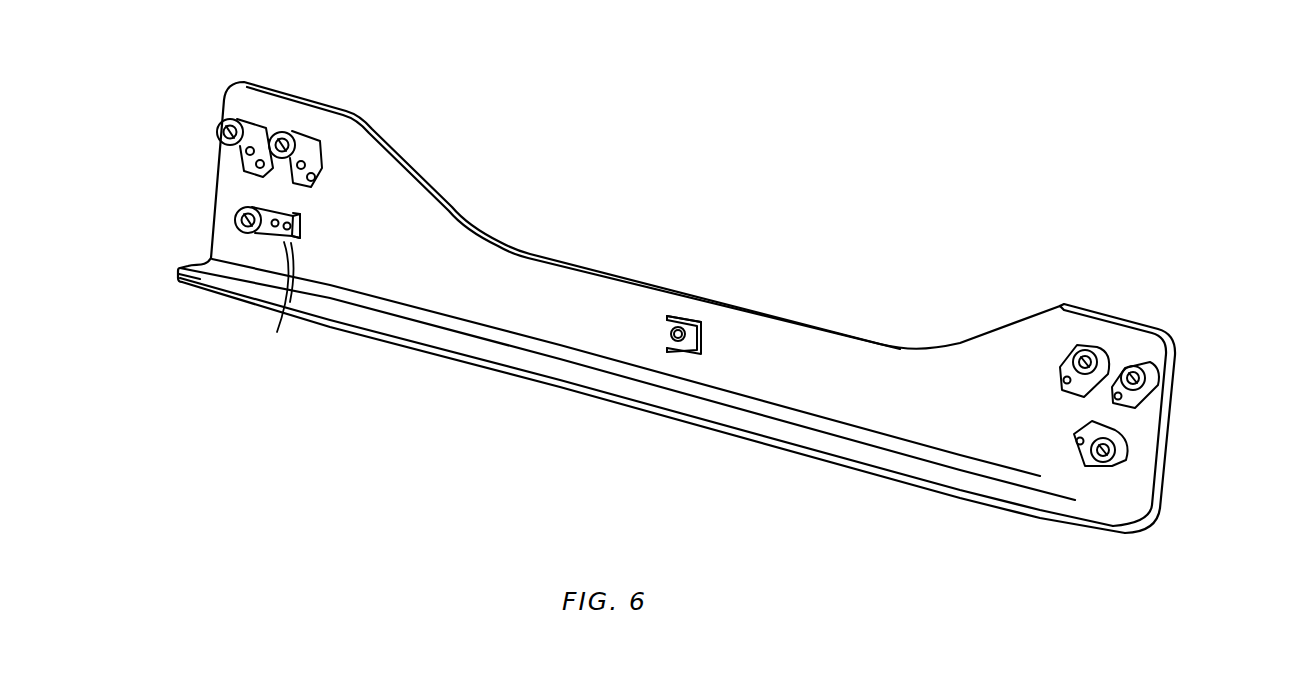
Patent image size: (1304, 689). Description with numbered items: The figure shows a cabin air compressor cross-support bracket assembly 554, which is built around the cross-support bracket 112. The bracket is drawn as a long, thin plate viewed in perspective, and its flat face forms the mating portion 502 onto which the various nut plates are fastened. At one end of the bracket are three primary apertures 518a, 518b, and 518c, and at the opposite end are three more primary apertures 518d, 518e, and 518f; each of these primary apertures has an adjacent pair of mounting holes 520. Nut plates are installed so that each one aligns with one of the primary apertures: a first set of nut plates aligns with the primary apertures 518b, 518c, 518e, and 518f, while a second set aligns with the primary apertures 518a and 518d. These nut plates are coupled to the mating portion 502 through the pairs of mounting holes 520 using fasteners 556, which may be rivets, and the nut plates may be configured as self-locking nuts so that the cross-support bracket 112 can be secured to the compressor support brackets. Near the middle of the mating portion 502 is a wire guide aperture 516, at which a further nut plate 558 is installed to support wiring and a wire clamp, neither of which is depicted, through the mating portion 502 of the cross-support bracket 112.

The cross-support bracket 112 is at (703, 108).
The mating portion 502 is at (592, 300).
The wire guide aperture 516 is at (703, 330).
The primary aperture 518a is at (246, 222).
The primary aperture 518b is at (226, 133).
The primary aperture 518c is at (284, 143).
The primary aperture 518d is at (1120, 452).
The primary aperture 518e is at (1139, 384).
The primary aperture 518f is at (1073, 362).
The mounting holes 520 is at (297, 215).
The cabin air compressor cross-support bracket assembly 554 is at (880, 236).
The fasteners 556 is at (276, 301).
The nut plate 558 is at (667, 318).